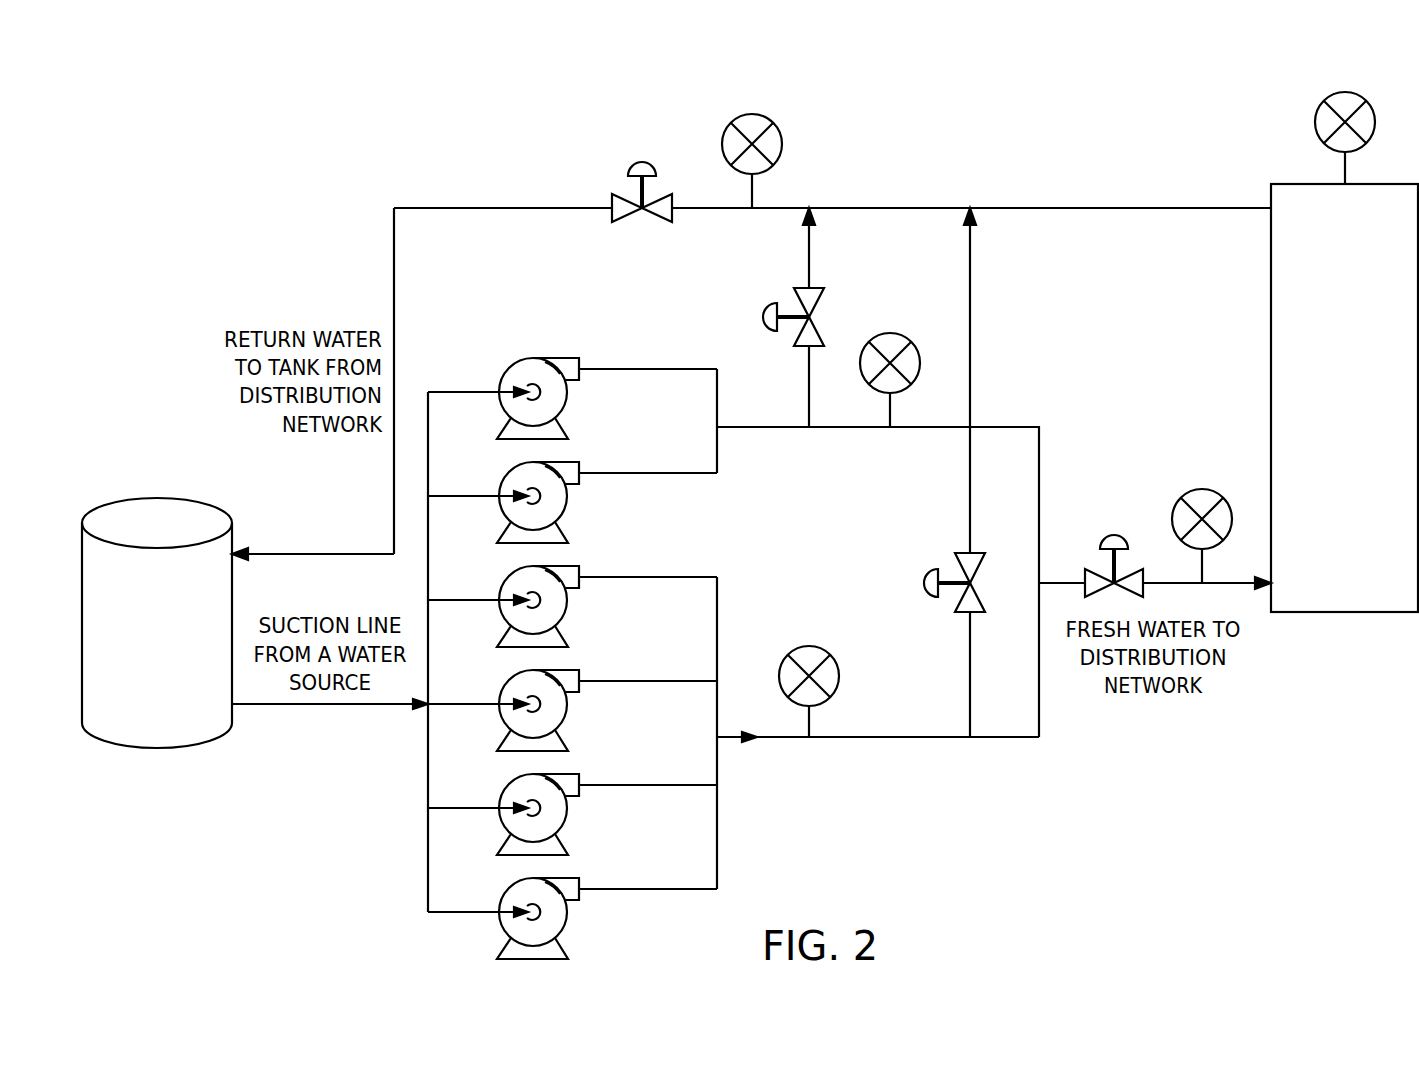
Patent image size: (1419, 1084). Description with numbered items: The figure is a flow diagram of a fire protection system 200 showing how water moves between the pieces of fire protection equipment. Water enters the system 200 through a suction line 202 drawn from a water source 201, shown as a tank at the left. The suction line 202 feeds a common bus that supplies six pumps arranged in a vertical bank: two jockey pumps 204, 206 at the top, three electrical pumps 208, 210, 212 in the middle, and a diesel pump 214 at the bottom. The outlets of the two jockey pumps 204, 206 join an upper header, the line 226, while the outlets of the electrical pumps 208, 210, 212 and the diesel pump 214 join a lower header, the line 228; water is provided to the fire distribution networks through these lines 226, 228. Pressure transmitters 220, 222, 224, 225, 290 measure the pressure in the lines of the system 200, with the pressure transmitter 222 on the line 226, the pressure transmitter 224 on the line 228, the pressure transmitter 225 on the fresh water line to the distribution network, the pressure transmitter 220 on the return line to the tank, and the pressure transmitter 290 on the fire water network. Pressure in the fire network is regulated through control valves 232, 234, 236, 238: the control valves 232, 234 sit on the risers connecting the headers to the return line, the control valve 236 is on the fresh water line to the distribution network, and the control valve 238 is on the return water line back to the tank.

The system 200 is at (1323, 447).
The water source 201 is at (135, 660).
The suction line 202 is at (333, 707).
The jockey pump 204 is at (572, 398).
The jockey pump 206 is at (572, 502).
The electrical pump 208 is at (572, 606).
The electrical pump 210 is at (572, 710).
The electrical pump 212 is at (572, 814).
The diesel pump 214 is at (572, 918).
The pressure transmitter 220 is at (745, 114).
The pressure transmitter 222 is at (892, 333).
The pressure transmitter 224 is at (800, 647).
The pressure transmitter 225 is at (1212, 492).
The line 226 is at (1012, 426).
The line 228 is at (866, 741).
The control valve 232 is at (760, 315).
The control valve 234 is at (922, 578).
The control valve 236 is at (1122, 534).
The control valve 238 is at (640, 162).
The pressure transmitter 290 is at (1355, 95).